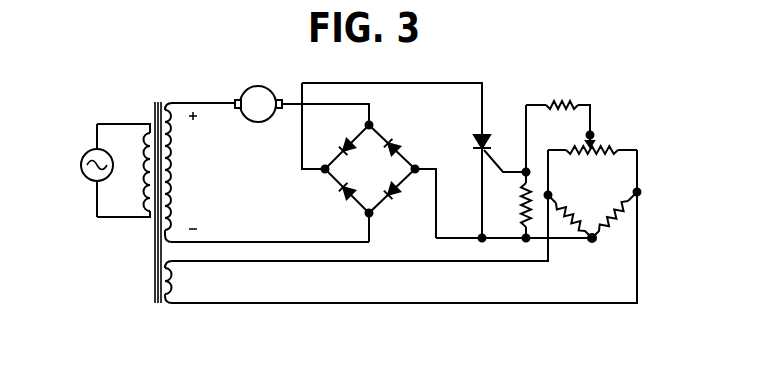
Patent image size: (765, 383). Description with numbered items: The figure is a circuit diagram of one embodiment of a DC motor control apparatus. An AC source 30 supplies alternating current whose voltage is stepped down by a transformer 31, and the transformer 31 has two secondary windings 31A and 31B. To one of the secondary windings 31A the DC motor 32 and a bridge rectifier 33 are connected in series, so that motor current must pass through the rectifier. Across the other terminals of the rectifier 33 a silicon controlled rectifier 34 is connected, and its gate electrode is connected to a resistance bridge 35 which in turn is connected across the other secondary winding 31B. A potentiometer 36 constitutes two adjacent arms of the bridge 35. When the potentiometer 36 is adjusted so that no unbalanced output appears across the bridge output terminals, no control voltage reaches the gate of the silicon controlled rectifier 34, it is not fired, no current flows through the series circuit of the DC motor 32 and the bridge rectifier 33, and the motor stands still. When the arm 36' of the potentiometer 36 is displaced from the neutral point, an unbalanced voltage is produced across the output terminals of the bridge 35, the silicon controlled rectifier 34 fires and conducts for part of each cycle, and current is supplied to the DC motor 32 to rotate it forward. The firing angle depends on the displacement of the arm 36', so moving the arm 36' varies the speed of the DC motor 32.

The AC source 30 is at (86, 176).
The transformer 31 is at (170, 96).
The secondary winding 31A is at (177, 166).
The secondary winding 31B is at (177, 278).
The DC motor 32 is at (249, 121).
The bridge rectifier 33 is at (384, 182).
The silicon controlled rectifier 34 is at (482, 134).
The resistance bridge 35 is at (604, 203).
The potentiometer 36 is at (592, 137).
The arm of the potentiometer 36' is at (584, 124).